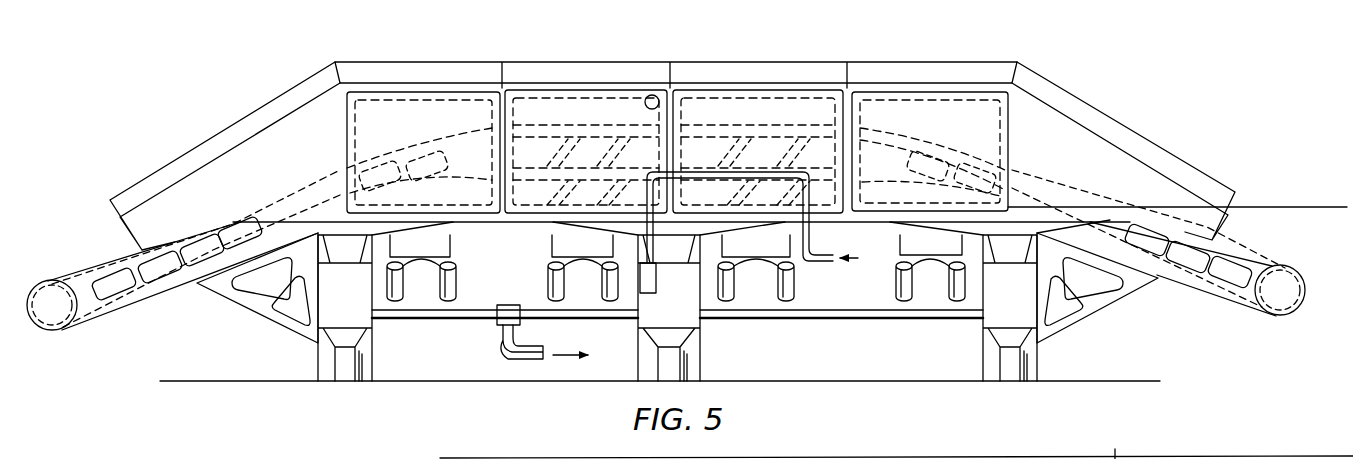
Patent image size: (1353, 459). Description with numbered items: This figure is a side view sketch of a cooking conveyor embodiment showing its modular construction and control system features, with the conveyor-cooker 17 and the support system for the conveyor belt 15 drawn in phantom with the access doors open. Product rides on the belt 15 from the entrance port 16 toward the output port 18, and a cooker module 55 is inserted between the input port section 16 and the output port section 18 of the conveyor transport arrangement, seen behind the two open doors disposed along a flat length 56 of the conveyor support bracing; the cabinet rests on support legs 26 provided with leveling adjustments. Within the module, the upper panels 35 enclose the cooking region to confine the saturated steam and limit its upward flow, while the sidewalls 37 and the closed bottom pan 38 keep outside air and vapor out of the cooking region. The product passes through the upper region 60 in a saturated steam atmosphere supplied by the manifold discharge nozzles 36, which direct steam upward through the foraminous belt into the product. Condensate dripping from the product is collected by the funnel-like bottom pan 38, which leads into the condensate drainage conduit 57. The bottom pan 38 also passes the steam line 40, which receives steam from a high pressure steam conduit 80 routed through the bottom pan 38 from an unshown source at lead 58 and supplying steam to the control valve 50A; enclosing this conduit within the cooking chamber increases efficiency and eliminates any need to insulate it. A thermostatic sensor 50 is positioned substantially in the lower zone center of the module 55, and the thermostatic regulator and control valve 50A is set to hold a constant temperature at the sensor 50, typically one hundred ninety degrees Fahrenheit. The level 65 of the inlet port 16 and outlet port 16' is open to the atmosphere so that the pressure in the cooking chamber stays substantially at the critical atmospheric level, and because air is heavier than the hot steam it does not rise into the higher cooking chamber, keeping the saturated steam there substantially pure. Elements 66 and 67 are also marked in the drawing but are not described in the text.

The conveyor belt 15 is at (62, 320).
The entrance port 16 is at (225, 156).
The outlet port 16' is at (1143, 151).
The cooker cabinet 17 is at (722, 46).
The output port 18 is at (1283, 320).
The support legs 26 is at (375, 330).
The upper panels 35 is at (743, 88).
The manifold discharge nozzles 36 is at (804, 128).
The sidewalls 37 is at (752, 120).
The bottom closure plate 38 is at (590, 234).
The steam inlet line 40 is at (668, 270).
The thermostatic sensor 50 is at (673, 152).
The control valve 50A is at (643, 288).
The cooker module 55 is at (858, 108).
The flat length 56 is at (577, 122).
The condensate drainage conduit 57 is at (790, 316).
The lead 58 is at (870, 286).
The upper region 60 is at (612, 116).
The level of the inlet and outlet ports 65 is at (1322, 208).
The frame member 66 is at (502, 457).
The frame member 67 is at (945, 457).
The high pressure steam conduit 80 is at (762, 170).